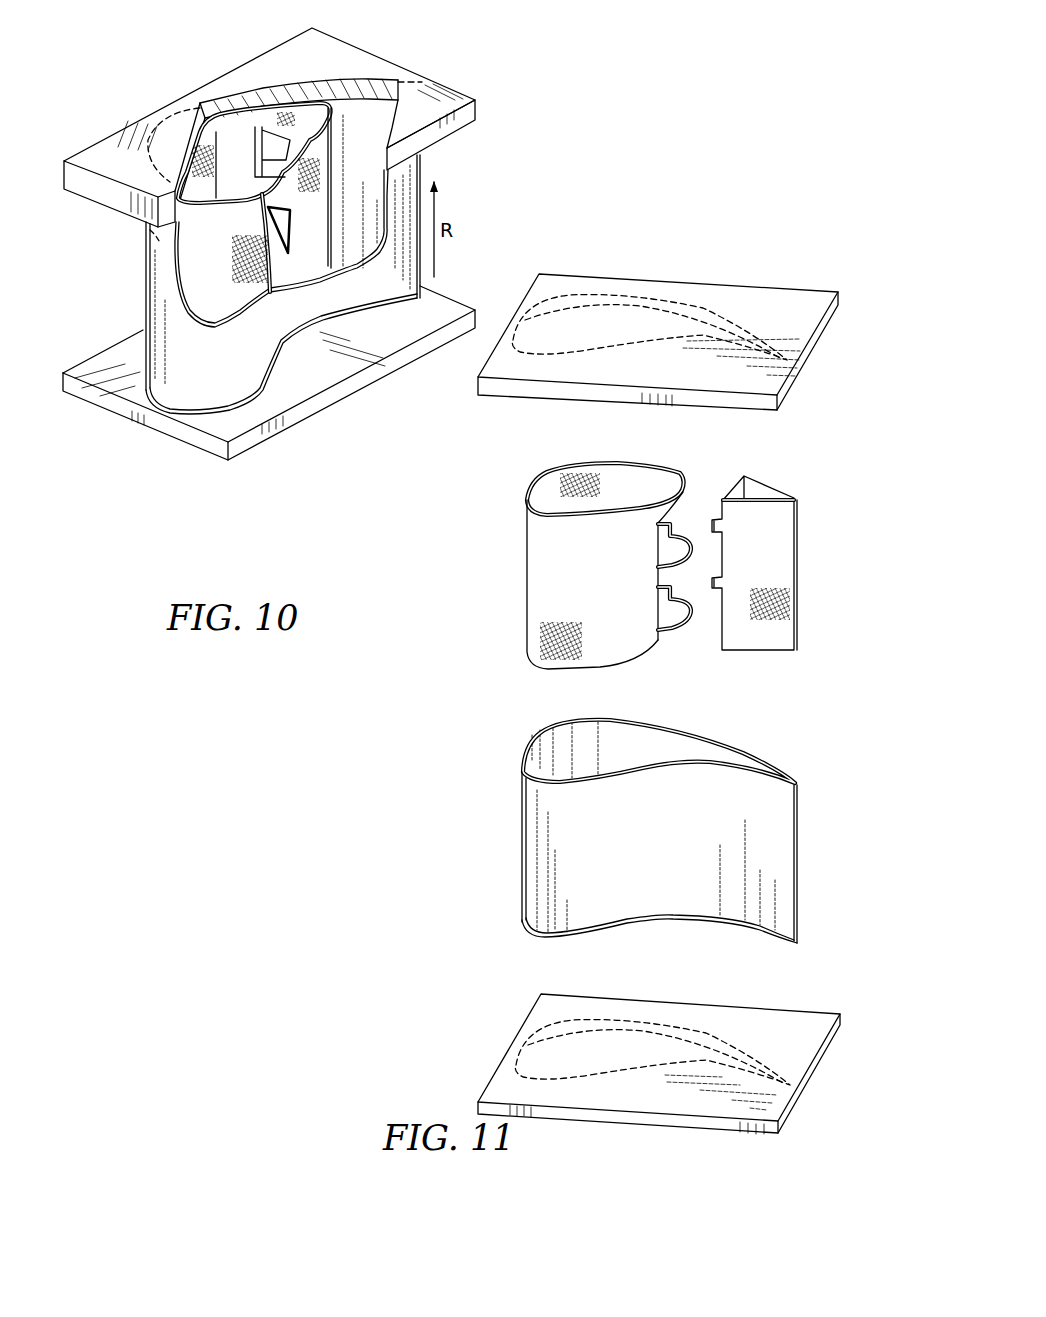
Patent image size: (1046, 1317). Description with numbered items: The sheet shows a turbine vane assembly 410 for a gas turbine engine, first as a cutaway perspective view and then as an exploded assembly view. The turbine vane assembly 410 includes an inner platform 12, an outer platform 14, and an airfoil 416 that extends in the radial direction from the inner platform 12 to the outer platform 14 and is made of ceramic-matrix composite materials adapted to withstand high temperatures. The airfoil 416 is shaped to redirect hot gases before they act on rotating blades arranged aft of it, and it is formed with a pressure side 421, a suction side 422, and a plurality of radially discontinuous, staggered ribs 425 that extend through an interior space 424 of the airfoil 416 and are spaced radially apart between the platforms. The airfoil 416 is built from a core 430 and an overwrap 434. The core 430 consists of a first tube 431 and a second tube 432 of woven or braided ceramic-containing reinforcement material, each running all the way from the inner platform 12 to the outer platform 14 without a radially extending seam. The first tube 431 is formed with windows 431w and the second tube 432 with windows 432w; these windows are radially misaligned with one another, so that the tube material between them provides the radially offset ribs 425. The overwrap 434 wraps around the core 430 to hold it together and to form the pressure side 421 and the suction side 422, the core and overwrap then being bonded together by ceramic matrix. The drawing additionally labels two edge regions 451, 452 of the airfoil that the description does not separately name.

In FIG. 10, the inner platform 12 is at (210, 448).
In FIG. 11, the inner platform 12 is at (517, 1087).
In FIG. 10, the outer platform 14 is at (88, 182).
In FIG. 11, the outer platform 14 is at (584, 287).
In FIG. 10, the turbine vane assembly 410 is at (112, 121).
In FIG. 11, the turbine vane assembly 410 is at (630, 200).
In FIG. 10, the airfoil 416 is at (122, 291).
In FIG. 11, the airfoil 416 is at (430, 688).
In FIG. 10, the pressure side 421 is at (273, 338).
In FIG. 11, the pressure side 421 is at (677, 907).
In FIG. 10, the suction side 422 is at (160, 243).
In FIG. 11, the suction side 422 is at (743, 740).
In FIG. 11, the interior space 424 is at (653, 752).
In FIG. 10, the ribs 425 is at (250, 172).
In FIG. 11, the ribs 425 is at (698, 520).
In FIG. 10, the core 430 is at (252, 296).
In FIG. 11, the core 430 is at (440, 592).
In FIG. 10, the first tube 431 is at (203, 158).
In FIG. 11, the first tube 431 is at (620, 452).
In FIG. 11, the windows of the first tube 431w is at (680, 550).
In FIG. 10, the second tube 432 is at (298, 100).
In FIG. 11, the second tube 432 is at (794, 465).
In FIG. 11, the windows of the second tube 432w is at (727, 483).
In FIG. 10, the overwrap 434 is at (183, 374).
In FIG. 11, the overwrap 434 is at (578, 718).
In FIG. 10, the leading edge 451 is at (157, 393).
In FIG. 11, the leading edge 451 is at (520, 843).
In FIG. 10, the trailing edge 452 is at (418, 278).
In FIG. 11, the trailing edge 452 is at (800, 830).